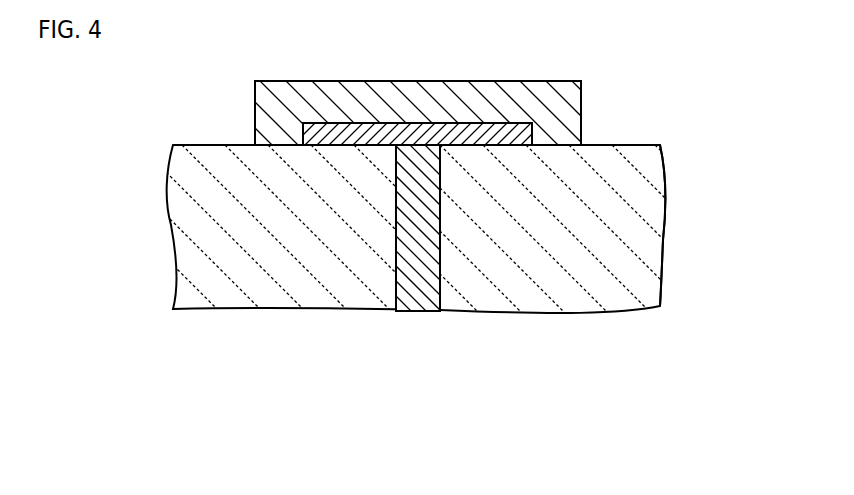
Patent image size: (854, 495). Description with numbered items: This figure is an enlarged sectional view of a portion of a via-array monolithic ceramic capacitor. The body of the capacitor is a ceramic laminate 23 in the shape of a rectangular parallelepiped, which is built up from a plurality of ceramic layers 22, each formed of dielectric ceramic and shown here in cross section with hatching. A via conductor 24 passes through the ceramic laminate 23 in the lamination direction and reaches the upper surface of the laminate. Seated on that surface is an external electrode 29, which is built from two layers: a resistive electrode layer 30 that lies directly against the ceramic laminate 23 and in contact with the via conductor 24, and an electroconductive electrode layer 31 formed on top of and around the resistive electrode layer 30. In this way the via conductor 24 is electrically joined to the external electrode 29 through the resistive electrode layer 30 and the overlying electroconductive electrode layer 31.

The ceramic layer 22 is at (640, 244).
The ceramic laminate 23 is at (668, 184).
The first via conductor 24 is at (415, 312).
The second external electrode 29 is at (435, 75).
The resistive electrode layer 30 is at (530, 127).
The electroconductive electrode layer 31 is at (565, 93).